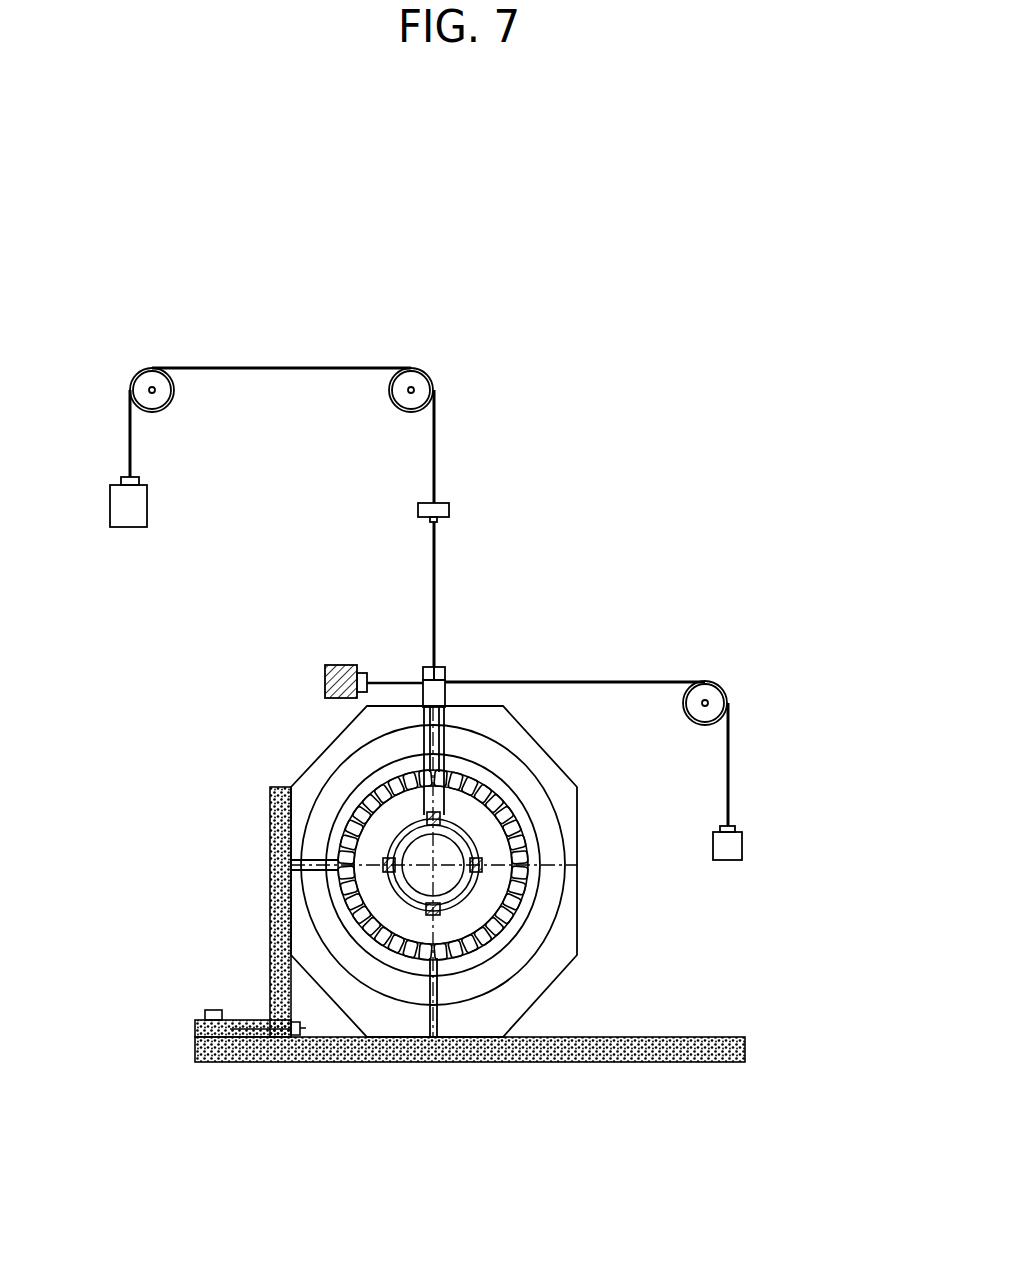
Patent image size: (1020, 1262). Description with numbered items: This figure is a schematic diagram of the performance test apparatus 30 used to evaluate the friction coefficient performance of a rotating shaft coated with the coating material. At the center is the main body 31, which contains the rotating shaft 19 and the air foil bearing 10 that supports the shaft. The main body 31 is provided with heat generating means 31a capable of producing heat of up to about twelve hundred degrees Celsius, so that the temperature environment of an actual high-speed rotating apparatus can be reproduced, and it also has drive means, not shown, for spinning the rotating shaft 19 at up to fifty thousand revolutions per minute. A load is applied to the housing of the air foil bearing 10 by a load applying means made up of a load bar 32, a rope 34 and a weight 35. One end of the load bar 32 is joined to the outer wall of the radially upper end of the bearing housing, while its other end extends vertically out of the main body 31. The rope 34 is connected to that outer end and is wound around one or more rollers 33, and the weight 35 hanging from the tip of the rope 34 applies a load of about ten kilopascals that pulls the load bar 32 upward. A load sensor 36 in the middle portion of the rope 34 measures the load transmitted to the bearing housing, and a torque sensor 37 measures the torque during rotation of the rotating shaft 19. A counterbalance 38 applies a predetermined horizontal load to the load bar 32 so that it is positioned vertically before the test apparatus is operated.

The air foil bearing 10 is at (470, 837).
The rotating shaft 19 is at (447, 875).
The performance test apparatus 30 is at (595, 383).
The main body 31 is at (525, 743).
The heat generating means 31a is at (517, 882).
The load bar 32 is at (460, 683).
The roller 33 is at (141, 380).
The rope 34 is at (436, 433).
The weight 35 is at (132, 510).
The load sensor 36 is at (449, 510).
The torque sensor 37 is at (325, 676).
The counterbalance 38 is at (742, 847).